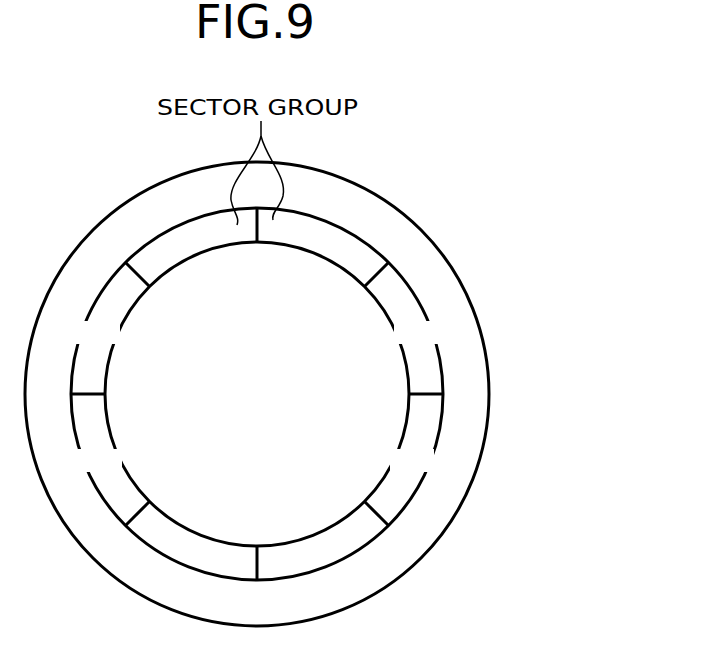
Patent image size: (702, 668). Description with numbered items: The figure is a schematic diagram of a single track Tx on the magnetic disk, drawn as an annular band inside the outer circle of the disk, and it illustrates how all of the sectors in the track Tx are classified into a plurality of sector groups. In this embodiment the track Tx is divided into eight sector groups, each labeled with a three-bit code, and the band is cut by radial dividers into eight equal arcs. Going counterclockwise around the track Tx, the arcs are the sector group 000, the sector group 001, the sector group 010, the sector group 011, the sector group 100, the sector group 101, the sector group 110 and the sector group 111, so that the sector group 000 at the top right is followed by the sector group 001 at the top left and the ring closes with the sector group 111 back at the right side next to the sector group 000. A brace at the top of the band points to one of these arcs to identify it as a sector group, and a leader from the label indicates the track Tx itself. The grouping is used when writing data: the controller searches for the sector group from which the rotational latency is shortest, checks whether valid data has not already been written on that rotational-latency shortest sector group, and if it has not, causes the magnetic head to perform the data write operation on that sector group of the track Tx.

The track Tx is at (413, 287).
The sector group 000 is at (319, 237).
The sector group 001 is at (196, 237).
The sector group 010 is at (98, 333).
The sector group 011 is at (100, 461).
The sector group 100 is at (197, 553).
The sector group 101 is at (318, 553).
The sector group 110 is at (412, 461).
The sector group 111 is at (416, 333).